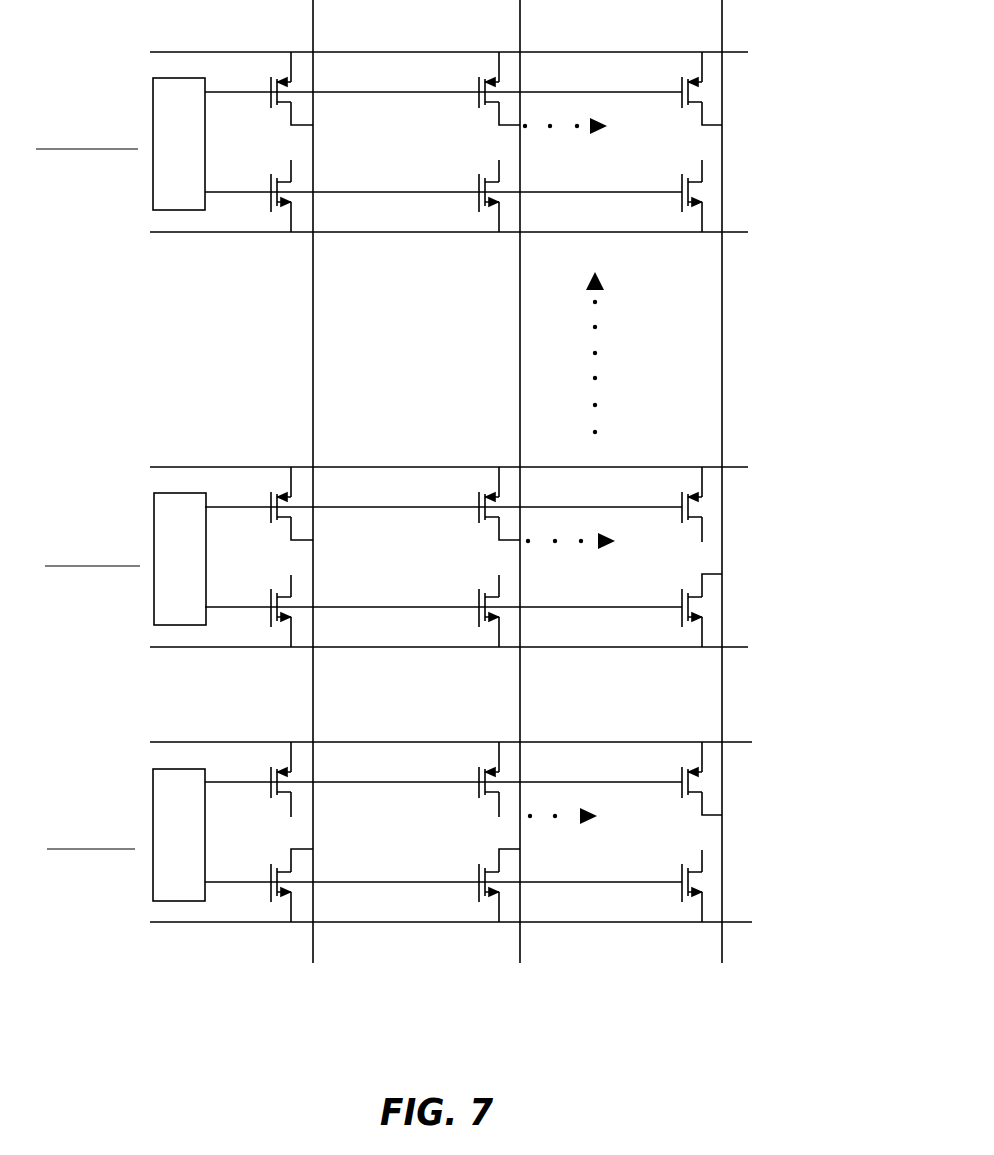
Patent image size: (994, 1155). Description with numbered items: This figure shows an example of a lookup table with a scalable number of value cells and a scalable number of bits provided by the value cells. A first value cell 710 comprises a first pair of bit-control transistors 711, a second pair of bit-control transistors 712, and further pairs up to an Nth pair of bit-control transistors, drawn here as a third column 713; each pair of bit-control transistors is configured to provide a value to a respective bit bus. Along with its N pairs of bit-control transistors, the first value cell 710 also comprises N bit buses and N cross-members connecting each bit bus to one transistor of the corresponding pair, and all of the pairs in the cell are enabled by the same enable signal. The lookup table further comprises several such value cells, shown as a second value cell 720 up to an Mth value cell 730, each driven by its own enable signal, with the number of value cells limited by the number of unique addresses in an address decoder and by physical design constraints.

The first value cell 710 is at (770, 922).
The second value cell 720 is at (774, 647).
The Mth value cell 730 is at (768, 52).
The first pair of bit-control transistors 711 is at (137, 983).
The second pair of bit-control transistors 712 is at (340, 983).
The third column 713 is at (545, 983).